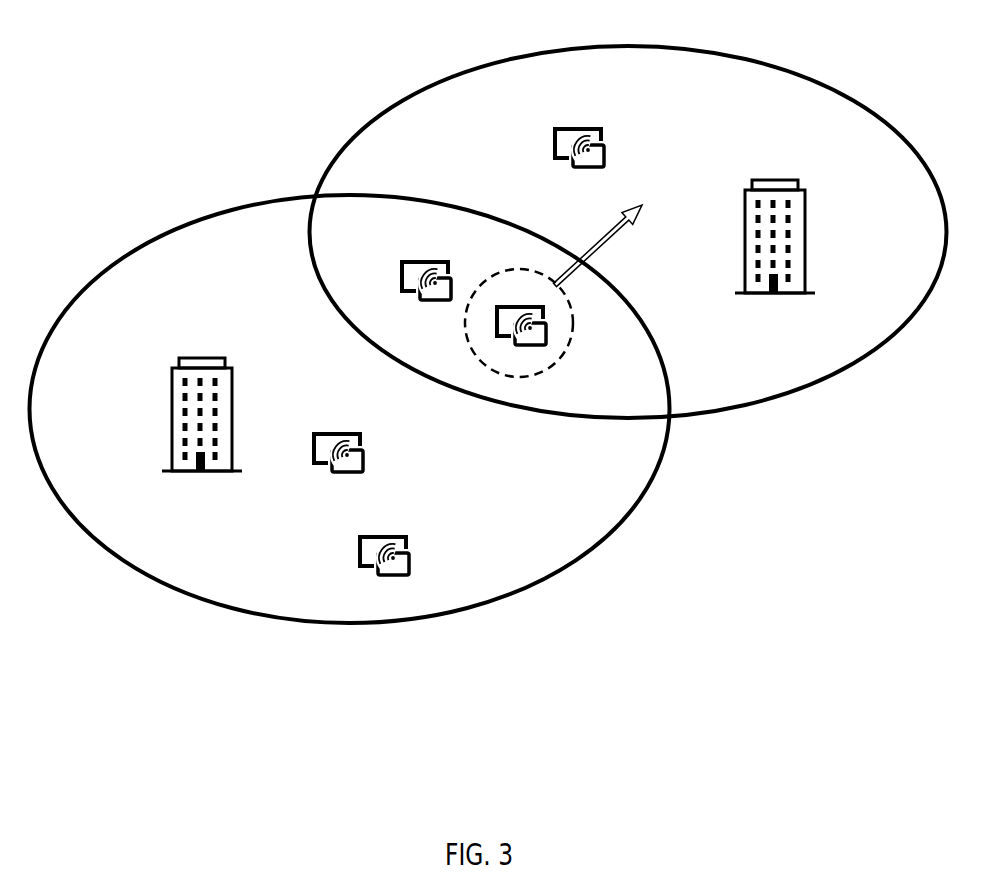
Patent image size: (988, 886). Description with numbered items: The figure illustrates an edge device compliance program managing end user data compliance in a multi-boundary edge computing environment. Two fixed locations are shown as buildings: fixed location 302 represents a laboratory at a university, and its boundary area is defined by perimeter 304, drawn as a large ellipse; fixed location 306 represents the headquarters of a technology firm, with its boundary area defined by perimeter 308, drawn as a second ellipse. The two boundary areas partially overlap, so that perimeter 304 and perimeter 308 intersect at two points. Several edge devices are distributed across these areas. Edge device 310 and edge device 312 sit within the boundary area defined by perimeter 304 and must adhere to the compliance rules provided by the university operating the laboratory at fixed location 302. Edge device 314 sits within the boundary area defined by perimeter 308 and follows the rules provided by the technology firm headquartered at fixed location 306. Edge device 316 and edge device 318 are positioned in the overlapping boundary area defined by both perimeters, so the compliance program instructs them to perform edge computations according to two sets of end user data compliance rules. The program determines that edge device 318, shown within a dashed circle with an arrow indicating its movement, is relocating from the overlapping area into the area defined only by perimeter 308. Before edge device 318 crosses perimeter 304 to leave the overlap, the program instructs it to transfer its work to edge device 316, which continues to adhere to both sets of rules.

The fixed location 302 is at (172, 397).
The perimeter 304 is at (72, 272).
The fixed location 306 is at (805, 216).
The perimeter 308 is at (845, 93).
The edge device 310 is at (312, 456).
The edge device 312 is at (358, 558).
The edge device 314 is at (553, 146).
The edge device 316 is at (400, 281).
The edge device 318 is at (545, 312).